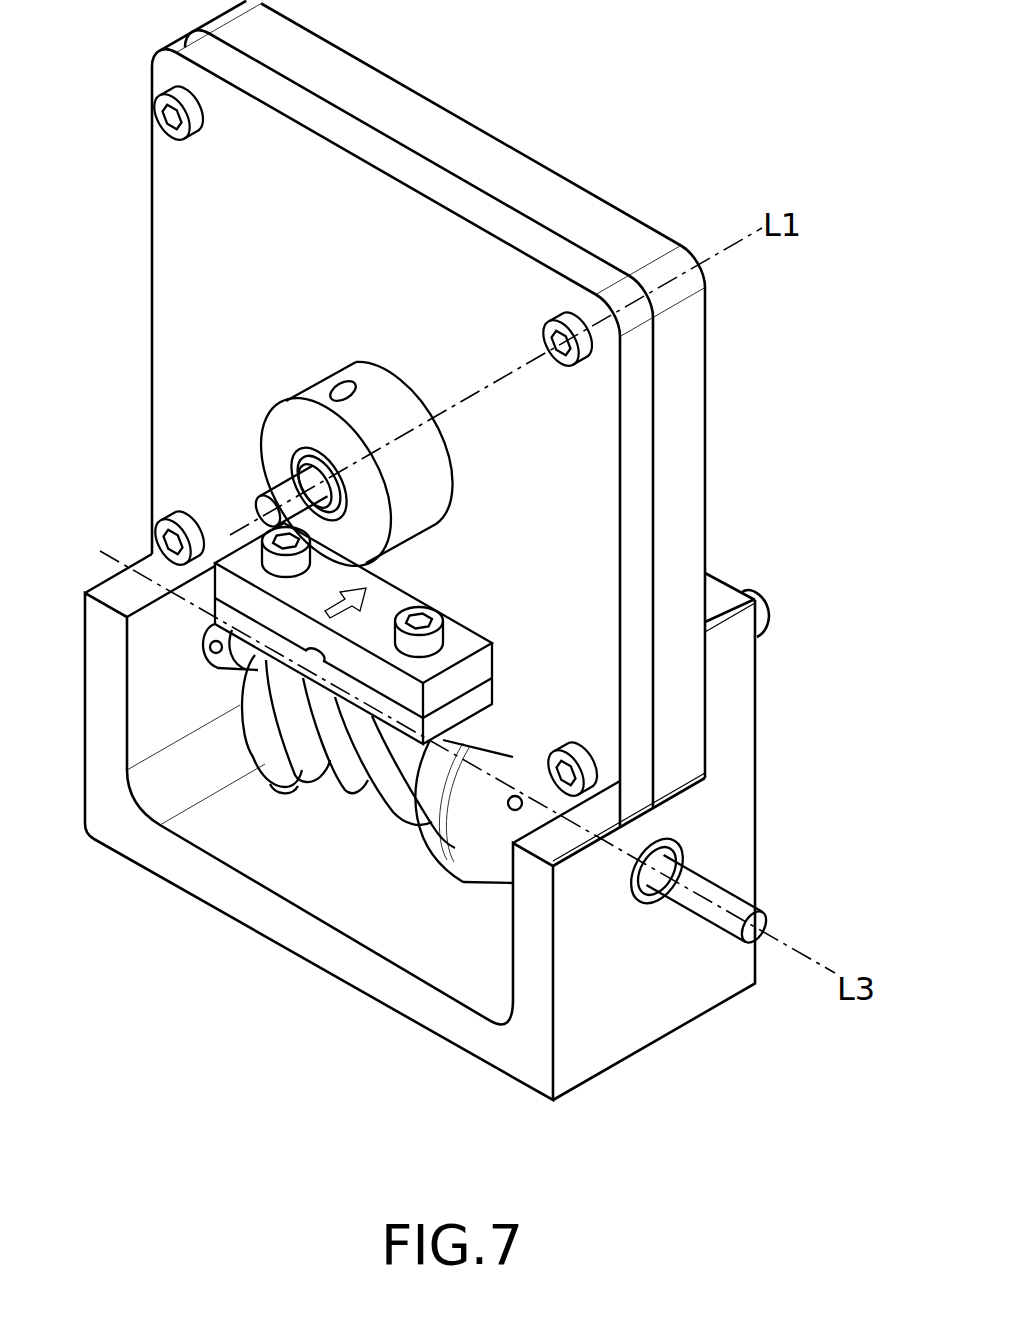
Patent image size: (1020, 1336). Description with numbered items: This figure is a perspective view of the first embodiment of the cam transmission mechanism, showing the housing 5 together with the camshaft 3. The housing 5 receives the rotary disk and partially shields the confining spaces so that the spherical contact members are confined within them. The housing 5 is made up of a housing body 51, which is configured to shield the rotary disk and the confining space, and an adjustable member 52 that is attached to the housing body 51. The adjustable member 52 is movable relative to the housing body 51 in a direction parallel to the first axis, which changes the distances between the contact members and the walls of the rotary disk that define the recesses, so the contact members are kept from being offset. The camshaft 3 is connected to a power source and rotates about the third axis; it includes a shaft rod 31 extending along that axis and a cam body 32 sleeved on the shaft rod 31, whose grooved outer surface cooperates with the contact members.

The housing 5 is at (386, 414).
The housing body 51 is at (163, 235).
The adjustable member 52 is at (483, 690).
The camshaft 3 is at (483, 839).
The shaft rod 31 is at (732, 898).
The cam body 32 is at (255, 722).